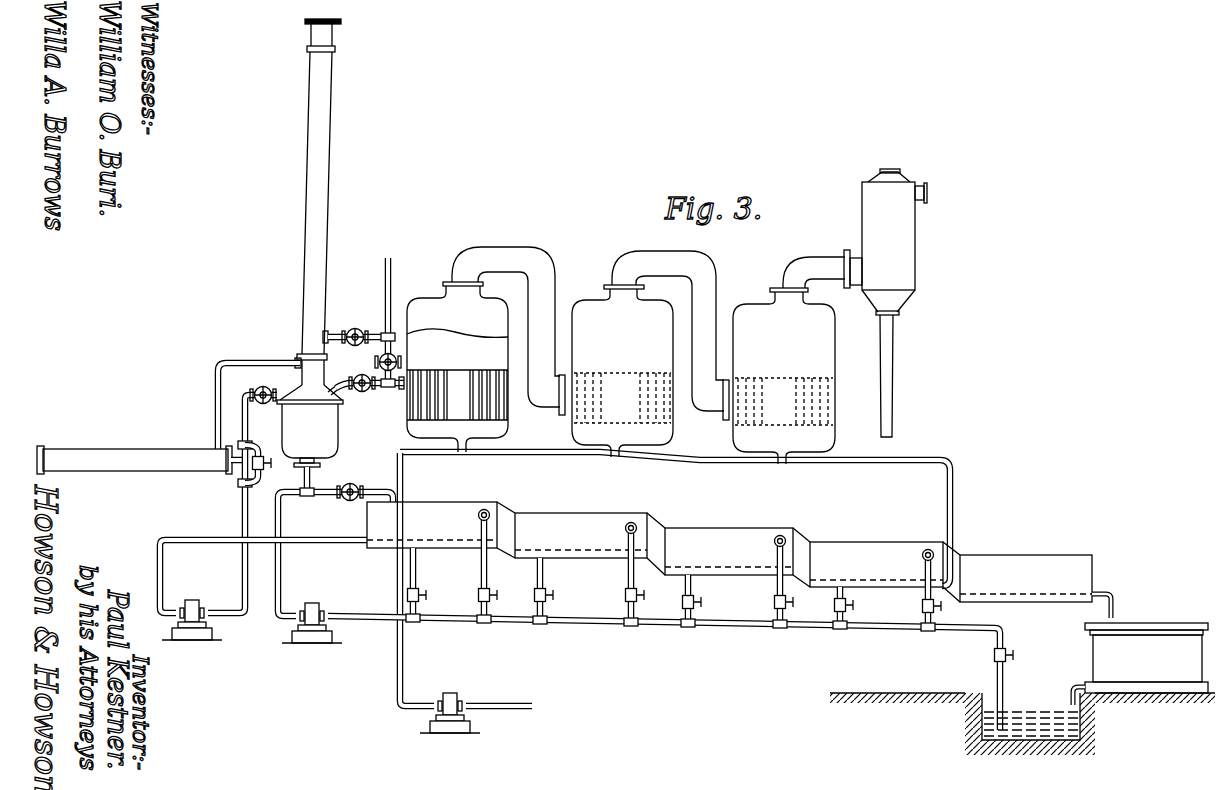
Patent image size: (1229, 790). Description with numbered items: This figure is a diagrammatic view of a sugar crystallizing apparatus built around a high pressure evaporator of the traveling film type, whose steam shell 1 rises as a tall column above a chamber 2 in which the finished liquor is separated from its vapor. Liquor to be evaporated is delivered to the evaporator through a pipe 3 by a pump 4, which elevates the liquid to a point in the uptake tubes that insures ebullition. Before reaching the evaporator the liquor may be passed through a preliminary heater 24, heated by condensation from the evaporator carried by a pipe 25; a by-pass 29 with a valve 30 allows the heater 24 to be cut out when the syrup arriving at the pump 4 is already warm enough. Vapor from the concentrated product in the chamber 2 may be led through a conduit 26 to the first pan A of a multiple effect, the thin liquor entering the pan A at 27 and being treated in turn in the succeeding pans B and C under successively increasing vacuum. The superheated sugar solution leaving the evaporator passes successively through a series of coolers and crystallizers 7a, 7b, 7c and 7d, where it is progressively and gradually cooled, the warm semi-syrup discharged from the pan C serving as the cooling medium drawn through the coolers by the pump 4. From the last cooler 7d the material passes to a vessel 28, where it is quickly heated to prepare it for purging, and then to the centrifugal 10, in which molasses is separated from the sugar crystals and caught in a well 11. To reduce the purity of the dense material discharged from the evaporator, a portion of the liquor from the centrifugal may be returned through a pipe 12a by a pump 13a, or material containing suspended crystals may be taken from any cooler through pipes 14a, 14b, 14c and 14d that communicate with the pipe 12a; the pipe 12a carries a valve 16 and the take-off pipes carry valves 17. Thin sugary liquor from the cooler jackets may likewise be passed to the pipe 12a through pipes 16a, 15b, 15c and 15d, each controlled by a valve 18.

The steam shell 1 is at (322, 243).
The chamber 2 is at (326, 442).
The pipe 3 is at (244, 570).
The pump 4 is at (192, 601).
The first cooling vessel 7a is at (441, 530).
The cooling vessel 7b is at (590, 544).
The cooling vessel 7c is at (737, 557).
The cooling vessel 7d is at (885, 572).
The centrifugal 10 is at (1140, 664).
The well 11 is at (965, 737).
The pipe 12a is at (576, 625).
The pump 13a is at (315, 605).
The pipe 14a is at (487, 579).
The pipe 14b is at (629, 575).
The pipe 14c is at (778, 585).
The pipe 14d is at (932, 619).
The pipe 15b is at (543, 579).
The pipe 15c is at (692, 585).
The pipe 15d is at (848, 615).
The valve 16 is at (994, 659).
The pipe 16a is at (415, 586).
The valve 17 is at (477, 599).
The valve 18 is at (409, 600).
The preliminary heater 24 is at (144, 472).
The pipe 25 is at (217, 408).
The conduit 26 is at (379, 391).
The thin liquor inlet 27 is at (403, 468).
The vessel 28 is at (1035, 586).
The by-pass 29 is at (260, 484).
The valve 30 is at (262, 456).
The first pan A is at (457, 367).
The second pan B is at (622, 371).
The third pan C is at (784, 376).